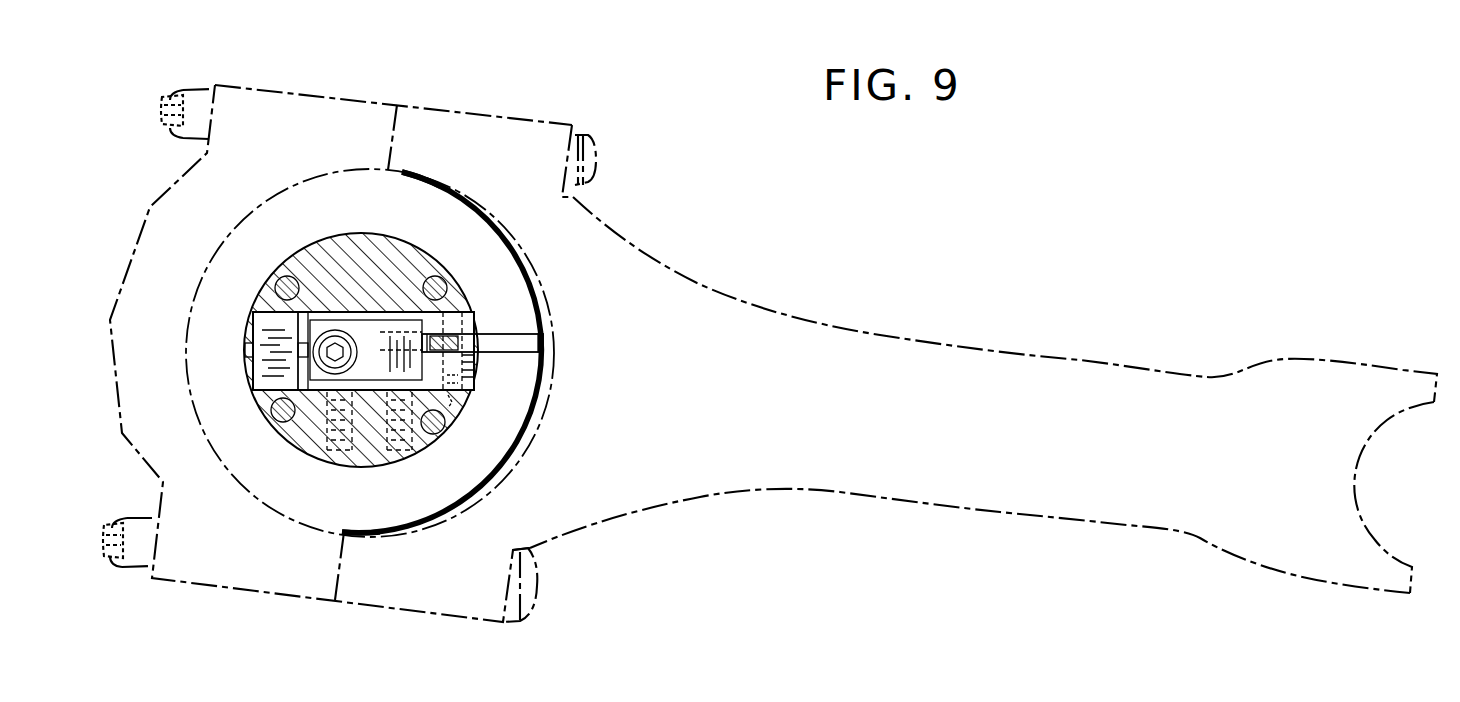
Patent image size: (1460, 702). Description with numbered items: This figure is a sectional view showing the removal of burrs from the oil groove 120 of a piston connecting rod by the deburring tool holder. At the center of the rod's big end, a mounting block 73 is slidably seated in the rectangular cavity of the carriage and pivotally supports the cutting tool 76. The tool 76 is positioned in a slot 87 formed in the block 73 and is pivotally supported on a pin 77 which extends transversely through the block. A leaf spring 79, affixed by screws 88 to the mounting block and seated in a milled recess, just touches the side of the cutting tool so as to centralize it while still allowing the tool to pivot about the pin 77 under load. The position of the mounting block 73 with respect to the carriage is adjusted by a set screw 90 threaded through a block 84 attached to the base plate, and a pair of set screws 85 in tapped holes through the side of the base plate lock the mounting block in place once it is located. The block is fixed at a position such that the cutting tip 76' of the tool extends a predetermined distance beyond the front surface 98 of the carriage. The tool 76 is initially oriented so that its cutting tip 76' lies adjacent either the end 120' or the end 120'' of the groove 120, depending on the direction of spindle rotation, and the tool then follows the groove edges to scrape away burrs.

The oil groove 120 is at (480, 352).
The end of the groove 120' is at (382, 194).
The end of the groove 120'' is at (343, 510).
The block 84 is at (268, 323).
The set screws 85 is at (296, 450).
The screws 88 is at (333, 333).
The leaf spring 79 is at (372, 328).
The slot 87 is at (450, 337).
The cutting tool 76 is at (504, 319).
The cutting tip 76' is at (575, 347).
The front surface 98 is at (482, 362).
The mounting block 73 is at (460, 378).
The set screw 90 is at (250, 351).
The pin 77 is at (452, 412).